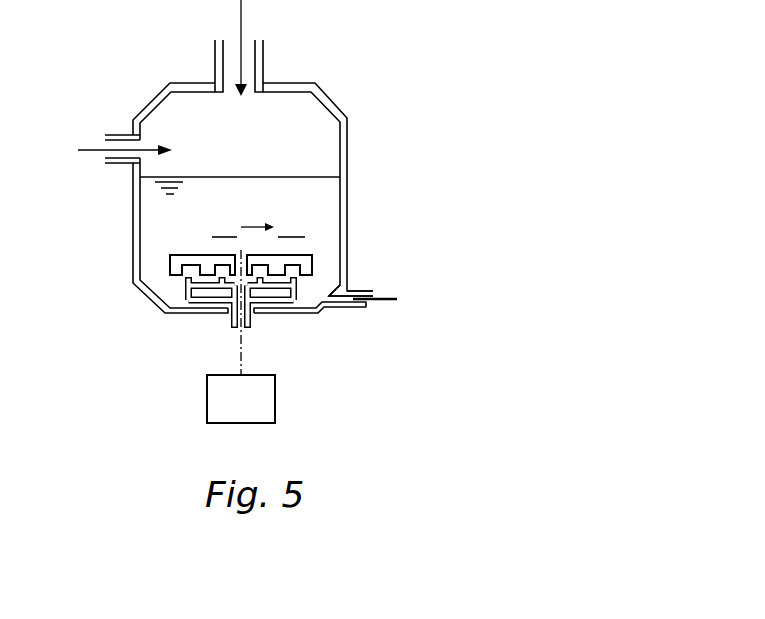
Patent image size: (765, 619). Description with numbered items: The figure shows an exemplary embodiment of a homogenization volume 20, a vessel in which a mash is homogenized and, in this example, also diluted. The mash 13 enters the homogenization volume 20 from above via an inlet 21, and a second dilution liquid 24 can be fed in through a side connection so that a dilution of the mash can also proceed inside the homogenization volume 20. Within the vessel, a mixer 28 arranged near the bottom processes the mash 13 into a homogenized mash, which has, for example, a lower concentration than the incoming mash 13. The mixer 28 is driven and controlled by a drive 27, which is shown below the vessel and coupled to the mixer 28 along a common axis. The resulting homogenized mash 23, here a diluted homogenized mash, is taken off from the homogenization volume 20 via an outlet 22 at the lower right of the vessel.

The mash 13 is at (239, 22).
The homogenization volume 20 is at (347, 160).
The inlet 21 is at (263, 52).
The outlet 22 is at (363, 287).
The homogenized mash 23 is at (379, 299).
The second dilution liquid 24 is at (94, 152).
The drive 27 is at (268, 395).
The mixer 28 is at (196, 290).